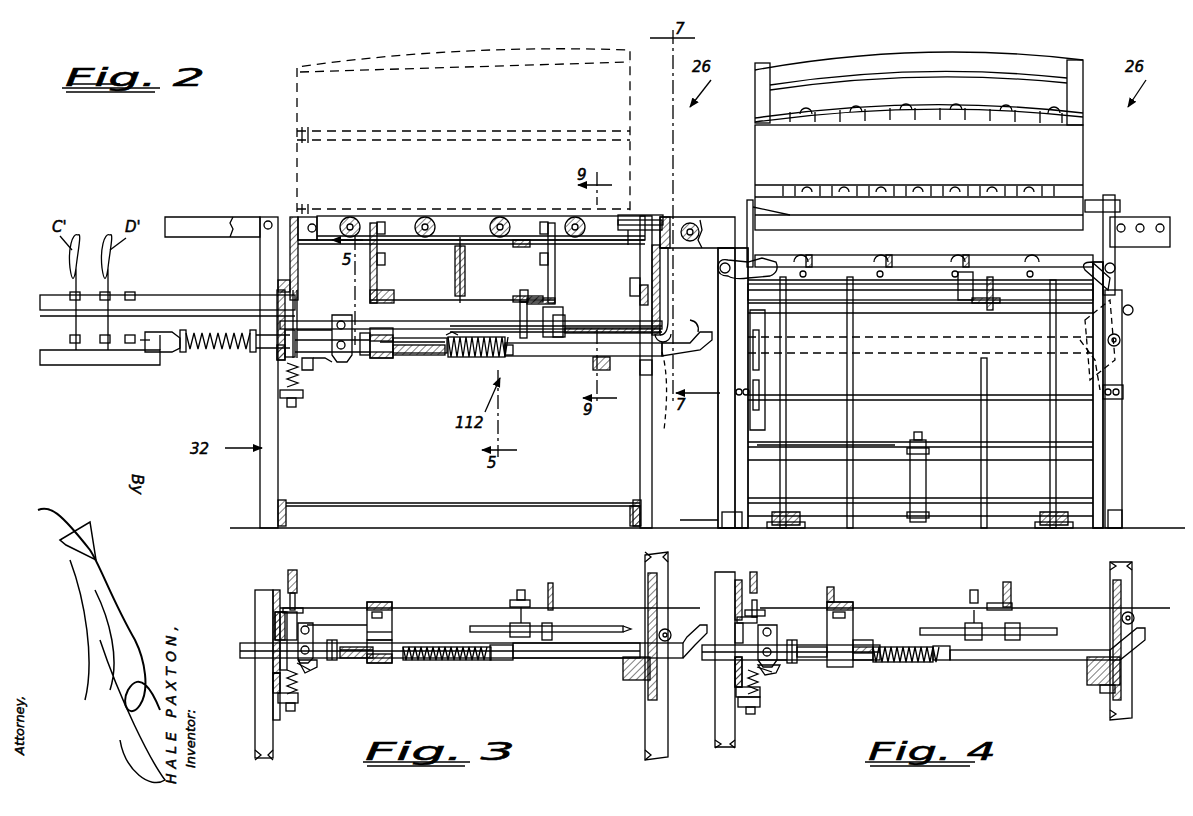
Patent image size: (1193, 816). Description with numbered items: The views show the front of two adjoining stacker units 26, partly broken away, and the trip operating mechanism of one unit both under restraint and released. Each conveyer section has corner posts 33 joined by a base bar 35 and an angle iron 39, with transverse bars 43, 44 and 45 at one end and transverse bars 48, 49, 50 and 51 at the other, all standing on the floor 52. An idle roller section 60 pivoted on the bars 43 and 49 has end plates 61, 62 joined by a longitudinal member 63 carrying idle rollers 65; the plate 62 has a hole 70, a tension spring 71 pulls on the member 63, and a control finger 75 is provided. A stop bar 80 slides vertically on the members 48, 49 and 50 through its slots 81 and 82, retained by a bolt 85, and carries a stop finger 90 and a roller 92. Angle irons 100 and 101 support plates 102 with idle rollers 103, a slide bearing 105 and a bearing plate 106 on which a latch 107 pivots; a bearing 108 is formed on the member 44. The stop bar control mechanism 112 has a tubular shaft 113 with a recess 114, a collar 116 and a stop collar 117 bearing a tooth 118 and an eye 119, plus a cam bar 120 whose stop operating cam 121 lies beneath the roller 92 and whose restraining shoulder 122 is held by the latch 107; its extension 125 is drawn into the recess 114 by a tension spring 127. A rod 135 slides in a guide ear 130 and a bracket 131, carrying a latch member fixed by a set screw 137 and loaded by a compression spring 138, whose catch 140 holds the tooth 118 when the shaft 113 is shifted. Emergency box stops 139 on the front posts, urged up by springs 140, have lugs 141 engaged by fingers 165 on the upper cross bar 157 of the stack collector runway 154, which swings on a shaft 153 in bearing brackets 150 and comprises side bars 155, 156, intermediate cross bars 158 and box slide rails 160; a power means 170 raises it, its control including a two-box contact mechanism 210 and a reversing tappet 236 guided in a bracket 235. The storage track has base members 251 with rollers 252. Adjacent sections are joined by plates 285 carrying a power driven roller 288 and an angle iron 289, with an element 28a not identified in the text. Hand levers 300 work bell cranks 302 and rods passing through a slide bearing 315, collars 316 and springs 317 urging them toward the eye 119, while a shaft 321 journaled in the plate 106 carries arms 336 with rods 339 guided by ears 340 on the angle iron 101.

In FIG. 2, the stacker unit 26 is at (919, 141).
In FIG. 2, the arm pivot 28a is at (252, 225).
In FIG. 2, the plate 285 is at (218, 225).
In FIG. 2, the hand lever 300 is at (78, 283).
In FIG. 2, the bell crank 302 is at (110, 295).
In FIG. 2, the slide bearing 315 is at (180, 360).
In FIG. 2, the collar 316 is at (258, 350).
In FIG. 2, the spring 317 is at (220, 343).
In FIG. 2, the bearing 108 is at (280, 345).
In FIG. 2, the corner post 33 is at (262, 480).
In FIG. 2, the base bar 35 is at (418, 510).
In FIG. 2, the horizontal angle iron 39 is at (1124, 392).
In FIG. 2, the transverse bar 43 is at (280, 290).
In FIG. 3, the transverse bar 43 is at (273, 596).
In FIG. 4, the transverse bar 43 is at (743, 590).
In FIG. 2, the transverse bar 44 is at (280, 365).
In FIG. 3, the transverse bar 44 is at (274, 682).
In FIG. 4, the transverse bar 44 is at (737, 680).
In FIG. 2, the transverse bar 45 is at (278, 511).
In FIG. 2, the transverse bar 48 is at (668, 222).
In FIG. 2, the transverse bar 49 is at (650, 293).
In FIG. 2, the transverse bar 50 is at (640, 368).
In FIG. 3, the transverse bar 50 is at (633, 665).
In FIG. 4, the transverse bar 50 is at (1095, 678).
In FIG. 2, the transverse bar 51 is at (630, 512).
In FIG. 2, the floor 52 is at (700, 528).
In FIG. 2, the idle roller section 60 is at (298, 220).
In FIG. 2, the end plate 61 is at (300, 250).
In FIG. 2, the end plate 62 is at (630, 283).
In FIG. 2, the longitudinal angle iron member 63 is at (468, 222).
In FIG. 2, the idle roller 65 is at (352, 220).
In FIG. 2, the hole 70 is at (625, 245).
In FIG. 2, the tension spring 71 is at (455, 286).
In FIG. 2, the control finger 75 is at (516, 246).
In FIG. 2, the stop bar 80 is at (660, 275).
In FIG. 3, the stop bar 80 is at (648, 586).
In FIG. 4, the stop bar 80 is at (1113, 588).
In FIG. 2, the slot 81 is at (652, 262).
In FIG. 2, the slot 82 is at (662, 400).
In FIG. 2, the bolt 85 is at (618, 364).
In FIG. 2, the stop finger 90 is at (640, 215).
In FIG. 2, the roller 92 is at (672, 332).
In FIG. 3, the roller 92 is at (668, 628).
In FIG. 4, the roller 92 is at (1134, 615).
In FIG. 2, the angle iron 100 is at (378, 288).
In FIG. 2, the angle iron 101 is at (555, 290).
In FIG. 2, the plate 102 is at (378, 270).
In FIG. 2, the idle roller 103 is at (382, 253).
In FIG. 2, the slide bearing 105 is at (410, 356).
In FIG. 2, the bearing plate 106 is at (553, 340).
In FIG. 2, the latch 107 is at (562, 340).
In FIG. 2, the stop bar control mechanism 112 is at (478, 347).
In FIG. 3, the stop bar control mechanism 112 is at (478, 672).
In FIG. 4, the stop bar control mechanism 112 is at (942, 668).
In FIG. 2, the tubular shaft 113 is at (432, 356).
In FIG. 3, the tubular shaft 113 is at (358, 658).
In FIG. 4, the tubular shaft 113 is at (860, 662).
In FIG. 2, the recess 114 is at (392, 358).
In FIG. 3, the recess 114 is at (370, 625).
In FIG. 4, the recess 114 is at (840, 627).
In FIG. 2, the collar 116 is at (364, 358).
In FIG. 2, the stop collar 117 is at (318, 368).
In FIG. 3, the stop collar 117 is at (307, 623).
In FIG. 4, the stop collar 117 is at (775, 667).
In FIG. 2, the tooth 118 is at (340, 363).
In FIG. 3, the tooth 118 is at (312, 673).
In FIG. 4, the tooth 118 is at (768, 675).
In FIG. 2, the eye 119 is at (337, 315).
In FIG. 4, the eye 119 is at (768, 627).
In FIG. 2, the cam bar 120 is at (595, 356).
In FIG. 3, the cam bar 120 is at (592, 658).
In FIG. 4, the cam bar 120 is at (1035, 660).
In FIG. 2, the stop operating cam 121 is at (690, 356).
In FIG. 3, the stop operating cam 121 is at (690, 625).
In FIG. 4, the stop operating cam 121 is at (1110, 640).
In FIG. 2, the restraining shoulder 122 is at (572, 338).
In FIG. 3, the restraining shoulder 122 is at (562, 632).
In FIG. 4, the restraining shoulder 122 is at (998, 660).
In FIG. 2, the extension 125 is at (518, 357).
In FIG. 3, the extension 125 is at (393, 663).
In FIG. 2, the tension spring 127 is at (446, 360).
In FIG. 3, the tension spring 127 is at (497, 660).
In FIG. 2, the guide ear 130 is at (295, 324).
In FIG. 3, the guide ear 130 is at (293, 593).
In FIG. 4, the guide ear 130 is at (758, 605).
In FIG. 2, the bracket 131 is at (287, 400).
In FIG. 3, the bracket 131 is at (285, 703).
In FIG. 4, the bracket 131 is at (748, 710).
In FIG. 3, the rod 135 is at (280, 620).
In FIG. 4, the rod 135 is at (737, 660).
In FIG. 3, the set screw 137 is at (280, 668).
In FIG. 3, the compression spring 138 is at (280, 698).
In FIG. 4, the compression spring 138 is at (737, 700).
In FIG. 2, the emergency box stop 139 is at (765, 256).
In FIG. 2, the catch 140 is at (325, 370).
In FIG. 3, the catch 140 is at (312, 672).
In FIG. 4, the catch 140 is at (772, 672).
In FIG. 2, the lug 141 is at (1112, 340).
In FIG. 2, the bearing bracket 150 is at (1122, 520).
In FIG. 2, the shaft 153 is at (742, 525).
In FIG. 2, the stack collector runway 154 is at (1015, 490).
In FIG. 2, the side bar 155 is at (735, 478).
In FIG. 2, the side bar 156 is at (1105, 476).
In FIG. 2, the upper cross bar 157 is at (920, 300).
In FIG. 2, the intermediate cross bar 158 is at (981, 366).
In FIG. 2, the box slide rail 160 is at (847, 367).
In FIG. 2, the finger 165 is at (1110, 296).
In FIG. 2, the power means 170 is at (910, 484).
In FIG. 2, the two-box contact mechanism 210 is at (770, 415).
In FIG. 2, the bracket 235 is at (278, 315).
In FIG. 2, the reversing tappet 236 is at (312, 385).
In FIG. 2, the channel iron base member 251 is at (800, 528).
In FIG. 2, the roller 252 is at (783, 525).
In FIG. 2, the power driven roller 288 is at (698, 226).
In FIG. 2, the angle iron 289 is at (700, 218).
In FIG. 2, the shaft 321 is at (625, 332).
In FIG. 2, the arm 336 is at (520, 315).
In FIG. 2, the rod 339 is at (528, 292).
In FIG. 2, the ear 340 is at (513, 299).